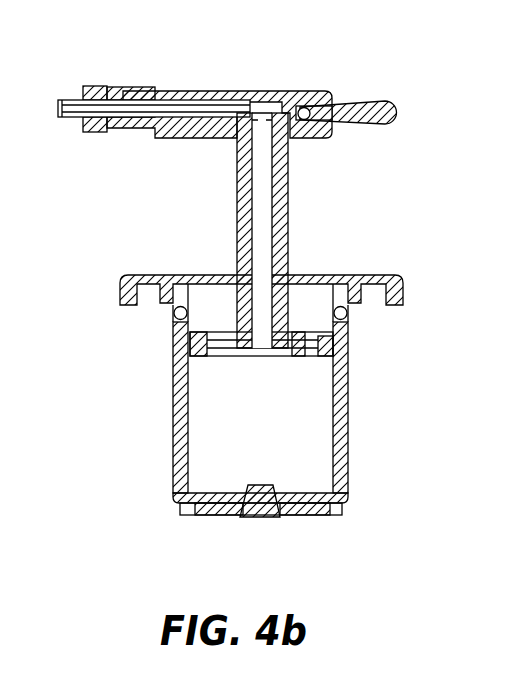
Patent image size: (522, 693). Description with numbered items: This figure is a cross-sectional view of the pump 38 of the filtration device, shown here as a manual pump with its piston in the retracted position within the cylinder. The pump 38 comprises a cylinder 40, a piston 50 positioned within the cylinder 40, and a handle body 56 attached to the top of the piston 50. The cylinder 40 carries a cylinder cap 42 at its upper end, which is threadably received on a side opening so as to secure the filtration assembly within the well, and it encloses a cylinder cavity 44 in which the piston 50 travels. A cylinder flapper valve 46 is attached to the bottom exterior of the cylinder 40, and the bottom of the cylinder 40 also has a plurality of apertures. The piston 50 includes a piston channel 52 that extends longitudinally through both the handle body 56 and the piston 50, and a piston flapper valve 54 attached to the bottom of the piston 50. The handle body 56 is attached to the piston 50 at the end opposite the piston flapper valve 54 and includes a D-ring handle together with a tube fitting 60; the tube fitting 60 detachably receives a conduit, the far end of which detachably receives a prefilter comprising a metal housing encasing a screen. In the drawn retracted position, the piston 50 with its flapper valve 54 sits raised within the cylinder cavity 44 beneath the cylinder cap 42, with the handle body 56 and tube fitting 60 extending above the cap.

The pump 38 is at (234, 419).
The cylinder 40 is at (172, 350).
The cylinder cap 42 is at (120, 284).
The cylinder cavity 44 is at (175, 470).
The cylinder flapper valve 46 is at (180, 507).
The piston 50 is at (237, 202).
The piston channel 52 is at (192, 100).
The piston flapper valve 54 is at (262, 352).
The handle body 56 is at (281, 90).
The tube fitting 60 is at (67, 98).